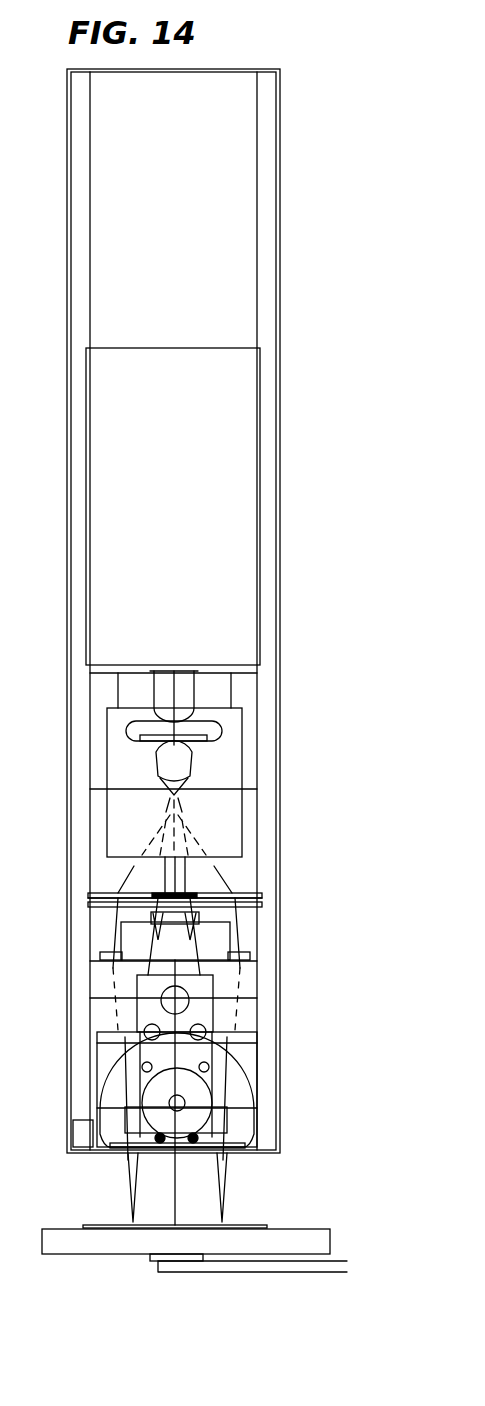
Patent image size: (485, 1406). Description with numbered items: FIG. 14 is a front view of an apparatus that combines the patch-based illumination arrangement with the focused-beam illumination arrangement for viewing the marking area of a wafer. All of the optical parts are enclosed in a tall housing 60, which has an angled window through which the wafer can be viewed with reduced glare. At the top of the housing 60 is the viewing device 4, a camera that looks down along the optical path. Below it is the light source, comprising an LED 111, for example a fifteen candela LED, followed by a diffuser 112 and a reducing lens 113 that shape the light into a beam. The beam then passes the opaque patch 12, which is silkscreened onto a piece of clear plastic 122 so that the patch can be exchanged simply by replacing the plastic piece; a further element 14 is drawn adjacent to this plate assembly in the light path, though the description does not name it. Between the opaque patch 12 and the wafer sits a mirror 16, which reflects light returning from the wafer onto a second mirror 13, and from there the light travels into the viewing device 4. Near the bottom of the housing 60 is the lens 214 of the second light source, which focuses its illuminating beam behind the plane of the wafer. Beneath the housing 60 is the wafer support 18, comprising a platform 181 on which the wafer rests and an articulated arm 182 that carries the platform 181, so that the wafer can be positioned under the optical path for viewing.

The housing 60 is at (281, 196).
The viewing device 4 is at (243, 520).
The LED 111 is at (185, 690).
The diffuser 112 is at (222, 729).
The reducing lens 113 is at (195, 762).
The opaque patch 12 is at (197, 890).
The piece of clear plastic 122 is at (245, 893).
The plate 14 is at (203, 915).
The mirror 16 is at (222, 918).
The second mirror 13 is at (219, 952).
The lens 214 is at (242, 1088).
The platform 181 is at (305, 1234).
The articulated arm 182 is at (232, 1272).
The wafer support 18 is at (148, 1266).